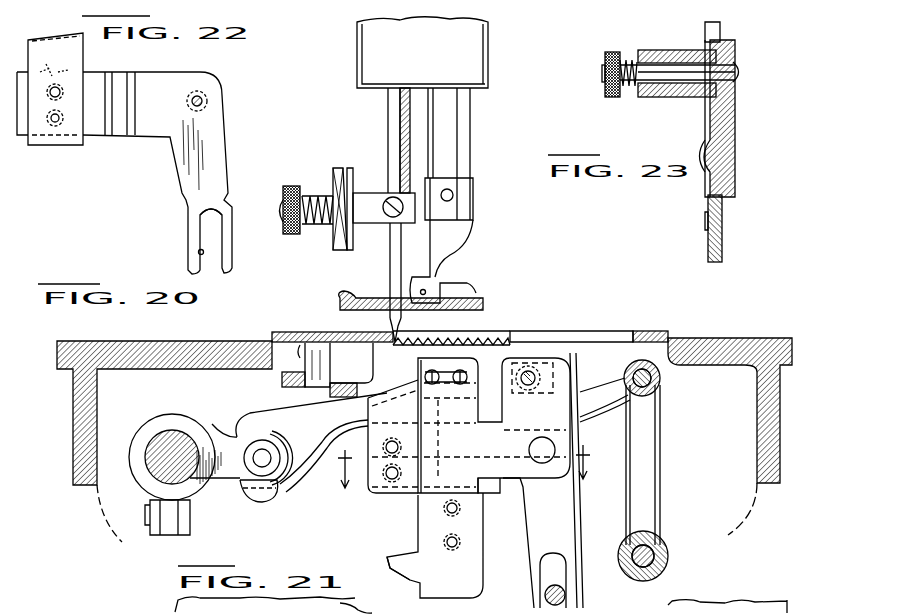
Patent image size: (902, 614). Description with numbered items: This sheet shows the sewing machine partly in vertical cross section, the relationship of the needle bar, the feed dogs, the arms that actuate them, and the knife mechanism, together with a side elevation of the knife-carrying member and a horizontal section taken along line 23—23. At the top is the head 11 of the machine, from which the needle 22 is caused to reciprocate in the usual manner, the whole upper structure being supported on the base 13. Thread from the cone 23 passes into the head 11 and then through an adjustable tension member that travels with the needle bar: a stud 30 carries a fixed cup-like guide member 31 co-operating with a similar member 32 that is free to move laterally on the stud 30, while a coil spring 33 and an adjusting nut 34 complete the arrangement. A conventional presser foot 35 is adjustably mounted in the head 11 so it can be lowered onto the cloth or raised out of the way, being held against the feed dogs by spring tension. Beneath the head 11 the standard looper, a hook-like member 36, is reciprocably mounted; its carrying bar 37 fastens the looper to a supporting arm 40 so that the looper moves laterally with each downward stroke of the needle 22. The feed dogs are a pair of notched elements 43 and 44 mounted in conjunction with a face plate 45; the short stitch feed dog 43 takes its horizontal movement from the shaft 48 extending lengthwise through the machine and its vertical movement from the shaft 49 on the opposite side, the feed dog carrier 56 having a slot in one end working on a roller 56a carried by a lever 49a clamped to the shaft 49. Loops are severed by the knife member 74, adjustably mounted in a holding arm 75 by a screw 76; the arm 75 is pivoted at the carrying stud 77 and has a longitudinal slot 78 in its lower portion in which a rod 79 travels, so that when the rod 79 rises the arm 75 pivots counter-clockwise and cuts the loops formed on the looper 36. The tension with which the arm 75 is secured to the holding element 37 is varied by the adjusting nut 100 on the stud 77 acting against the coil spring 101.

In FIG. 20, the head 11 is at (490, 40).
In FIG. 20, the base 13 is at (716, 320).
In FIG. 20, the needle 22 is at (393, 263).
In FIG. 20, the cone 23 is at (469, 477).
In FIG. 20, the stud 30 is at (310, 198).
In FIG. 20, the cup-like guide member 31 is at (352, 168).
In FIG. 20, the cup-like guide member 32 is at (338, 168).
In FIG. 20, the coil spring 33 is at (318, 226).
In FIG. 20, the adjusting nut 34 is at (290, 235).
In FIG. 20, the presser foot 35 is at (490, 302).
In FIG. 20, the hook-like member 36 is at (375, 368).
In FIG. 23, the carrying bar 37 is at (735, 152).
In FIG. 20, the carrying bar 37 is at (470, 540).
In FIG. 20, the supporting arm 40 is at (392, 570).
In FIG. 20, the short stitch feed dog 43 is at (300, 353).
In FIG. 20, the feed dog 44 is at (373, 332).
In FIG. 20, the face plate 45 is at (310, 337).
In FIG. 20, the shaft 48 is at (668, 552).
In FIG. 20, the shaft 49 is at (160, 455).
In FIG. 20, the lever 49a is at (224, 485).
In FIG. 20, the feed dog carrier 56 is at (300, 500).
In FIG. 20, the roller 56a is at (266, 494).
In FIG. 22, the knife member 74 is at (55, 40).
In FIG. 22, the holding arm 75 is at (222, 140).
In FIG. 23, the holding arm 75 is at (708, 192).
In FIG. 20, the holding arm 75 is at (570, 512).
In FIG. 22, the screw 76 is at (55, 122).
In FIG. 22, the carrying stud 77 is at (208, 98).
In FIG. 23, the carrying stud 77 is at (690, 64).
In FIG. 22, the longitudinal slot 78 is at (198, 254).
In FIG. 20, the longitudinal slot 78 is at (570, 562).
In FIG. 20, the rod 79 is at (575, 598).
In FIG. 23, the adjusting nut 100 is at (612, 52).
In FIG. 20, the adjusting nut 100 is at (538, 450).
In FIG. 23, the coil spring 101 is at (630, 88).